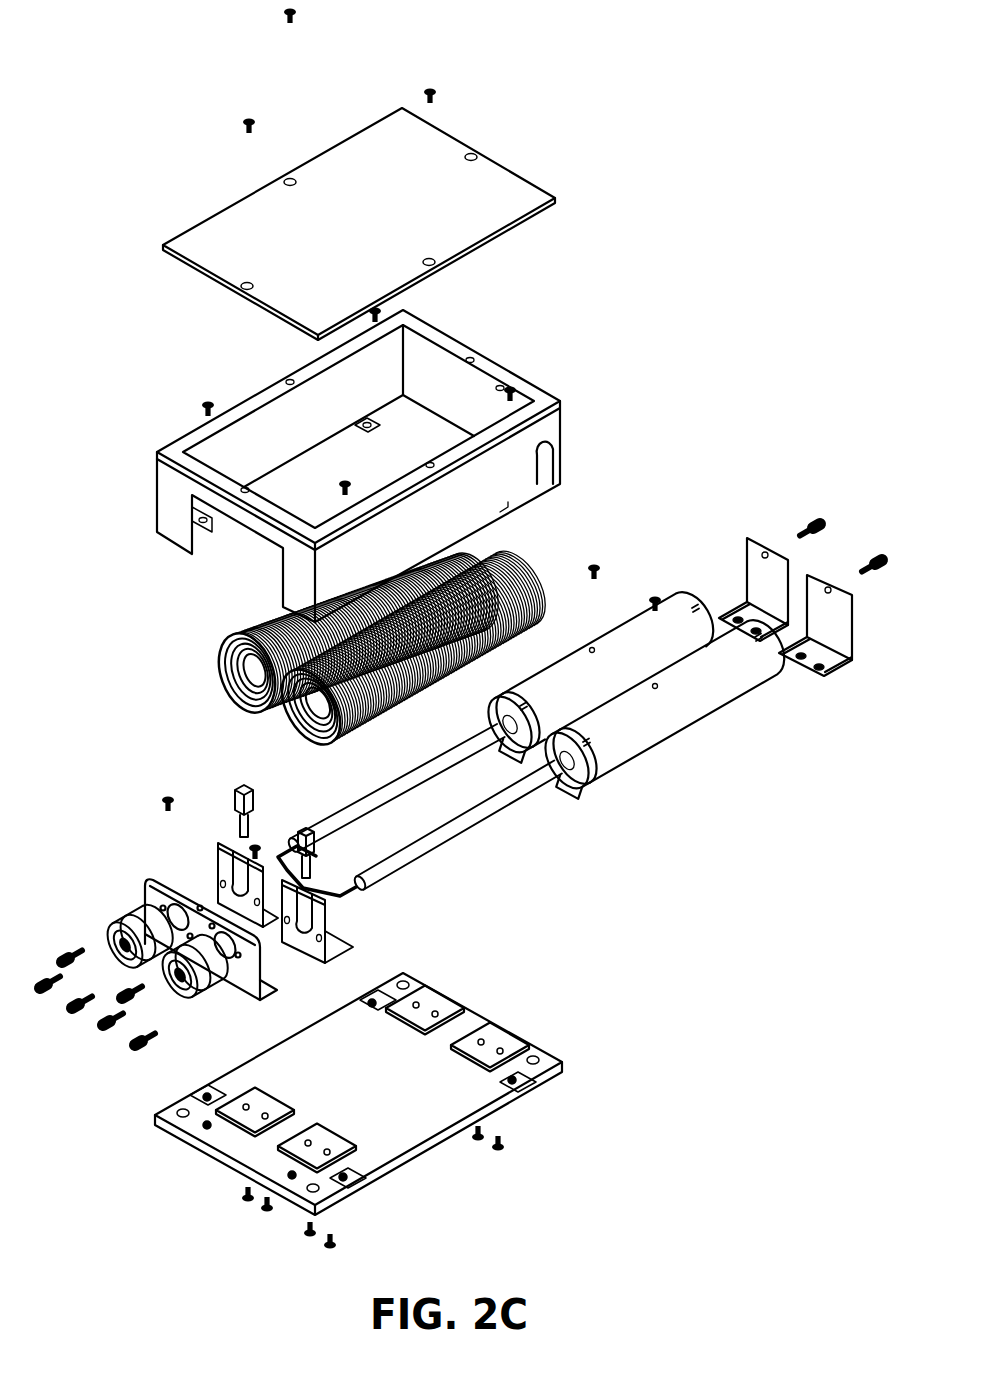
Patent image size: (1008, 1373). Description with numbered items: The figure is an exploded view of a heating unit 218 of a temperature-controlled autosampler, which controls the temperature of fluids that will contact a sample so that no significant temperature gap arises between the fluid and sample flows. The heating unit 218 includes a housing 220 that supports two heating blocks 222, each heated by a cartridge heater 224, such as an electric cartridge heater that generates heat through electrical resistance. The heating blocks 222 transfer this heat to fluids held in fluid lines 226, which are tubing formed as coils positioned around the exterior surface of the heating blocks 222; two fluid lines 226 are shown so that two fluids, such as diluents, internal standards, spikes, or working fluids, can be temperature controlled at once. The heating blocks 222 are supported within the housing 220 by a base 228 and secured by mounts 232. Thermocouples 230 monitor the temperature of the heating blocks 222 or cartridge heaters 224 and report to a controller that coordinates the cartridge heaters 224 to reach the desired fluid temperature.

The heating unit 218 is at (652, 218).
The housing 220 is at (533, 397).
The heating blocks 222 is at (668, 740).
The cartridge heaters 224 is at (400, 800).
The fluid lines 226 is at (208, 685).
The base 228 is at (533, 1083).
The thermocouples 230 is at (300, 840).
The mounts 232 is at (828, 583).